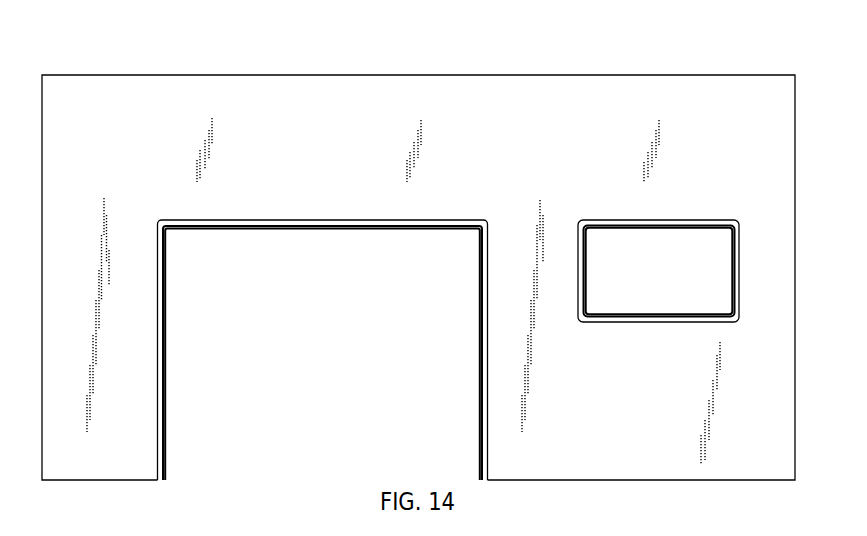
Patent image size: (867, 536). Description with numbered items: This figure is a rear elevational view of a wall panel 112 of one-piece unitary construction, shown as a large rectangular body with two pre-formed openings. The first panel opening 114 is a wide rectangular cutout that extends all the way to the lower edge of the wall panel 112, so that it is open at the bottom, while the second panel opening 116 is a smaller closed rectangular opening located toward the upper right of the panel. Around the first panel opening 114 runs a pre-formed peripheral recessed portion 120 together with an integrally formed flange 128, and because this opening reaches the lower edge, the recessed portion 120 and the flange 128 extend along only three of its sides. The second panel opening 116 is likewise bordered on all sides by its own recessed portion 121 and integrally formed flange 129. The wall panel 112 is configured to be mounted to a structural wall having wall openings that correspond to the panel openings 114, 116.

The wall panel 112 is at (421, 75).
The first panel opening 114 is at (290, 219).
The second panel opening 116 is at (673, 220).
The recessed portion 120 is at (212, 214).
The recessed portion 121 is at (598, 213).
The flange 128 is at (358, 225).
The flange 129 is at (712, 222).